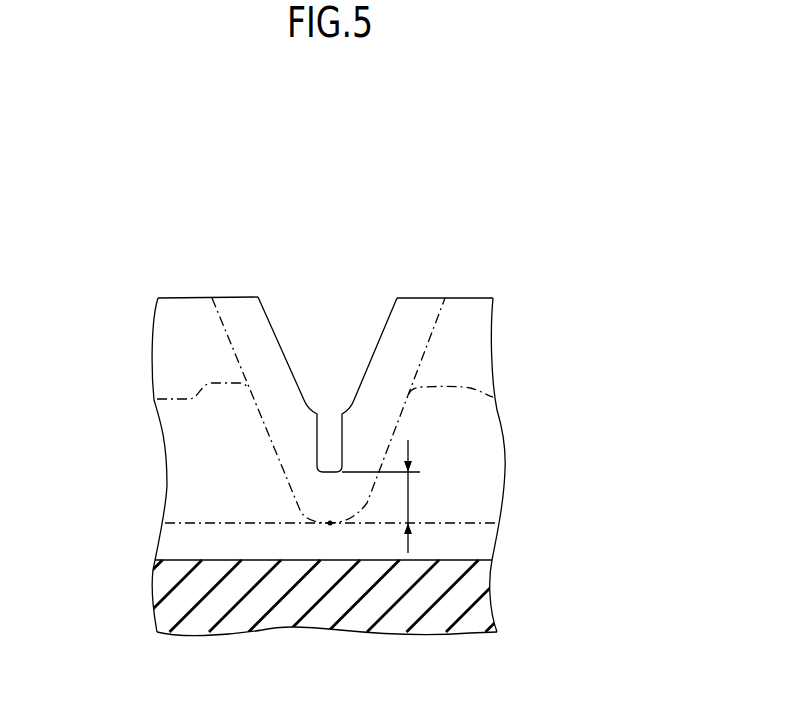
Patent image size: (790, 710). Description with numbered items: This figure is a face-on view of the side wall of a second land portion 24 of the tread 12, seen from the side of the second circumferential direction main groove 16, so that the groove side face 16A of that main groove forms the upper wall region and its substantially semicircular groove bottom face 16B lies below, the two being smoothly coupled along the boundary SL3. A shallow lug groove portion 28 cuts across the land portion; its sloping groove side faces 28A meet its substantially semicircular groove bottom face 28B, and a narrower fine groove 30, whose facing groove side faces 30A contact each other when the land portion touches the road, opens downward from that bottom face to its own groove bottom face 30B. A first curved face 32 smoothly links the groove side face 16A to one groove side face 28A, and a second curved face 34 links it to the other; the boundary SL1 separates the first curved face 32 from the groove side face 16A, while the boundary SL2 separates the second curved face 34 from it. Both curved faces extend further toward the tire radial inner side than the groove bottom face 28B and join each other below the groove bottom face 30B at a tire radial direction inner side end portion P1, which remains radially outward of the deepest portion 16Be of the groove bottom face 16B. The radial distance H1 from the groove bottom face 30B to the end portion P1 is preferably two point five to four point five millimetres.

The tread 12 is at (491, 295).
The second circumferential direction main groove 16 is at (171, 350).
The groove side face 16A is at (472, 349).
The groove bottom face 16B is at (473, 541).
The deepest portion 16Be is at (217, 560).
The second land portion 24 is at (186, 297).
The shallow lug groove portion 28 is at (417, 203).
The groove side face 28A is at (265, 312).
The groove bottom face 28B is at (318, 416).
The fine groove 30 is at (583, 125).
The groove side face 30A is at (327, 470).
The groove bottom face 30B is at (332, 470).
The first curved face 32 is at (410, 317).
The second curved face 34 is at (241, 317).
The boundary SL1 is at (493, 397).
The boundary SL2 is at (157, 399).
The boundary SL3 is at (192, 523).
The tire radial direction inner side end portion P1 is at (330, 523).
The distance H1 is at (410, 500).